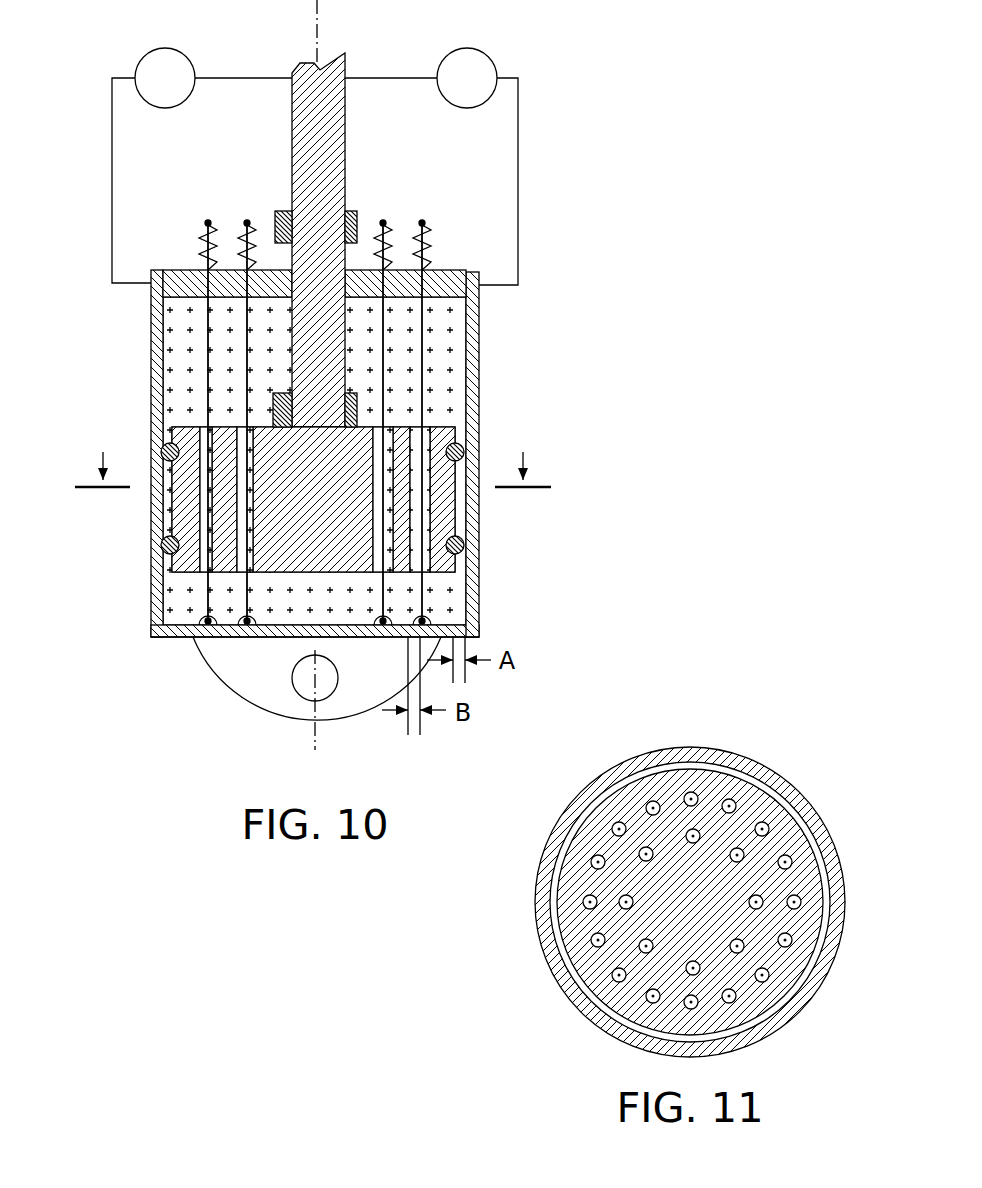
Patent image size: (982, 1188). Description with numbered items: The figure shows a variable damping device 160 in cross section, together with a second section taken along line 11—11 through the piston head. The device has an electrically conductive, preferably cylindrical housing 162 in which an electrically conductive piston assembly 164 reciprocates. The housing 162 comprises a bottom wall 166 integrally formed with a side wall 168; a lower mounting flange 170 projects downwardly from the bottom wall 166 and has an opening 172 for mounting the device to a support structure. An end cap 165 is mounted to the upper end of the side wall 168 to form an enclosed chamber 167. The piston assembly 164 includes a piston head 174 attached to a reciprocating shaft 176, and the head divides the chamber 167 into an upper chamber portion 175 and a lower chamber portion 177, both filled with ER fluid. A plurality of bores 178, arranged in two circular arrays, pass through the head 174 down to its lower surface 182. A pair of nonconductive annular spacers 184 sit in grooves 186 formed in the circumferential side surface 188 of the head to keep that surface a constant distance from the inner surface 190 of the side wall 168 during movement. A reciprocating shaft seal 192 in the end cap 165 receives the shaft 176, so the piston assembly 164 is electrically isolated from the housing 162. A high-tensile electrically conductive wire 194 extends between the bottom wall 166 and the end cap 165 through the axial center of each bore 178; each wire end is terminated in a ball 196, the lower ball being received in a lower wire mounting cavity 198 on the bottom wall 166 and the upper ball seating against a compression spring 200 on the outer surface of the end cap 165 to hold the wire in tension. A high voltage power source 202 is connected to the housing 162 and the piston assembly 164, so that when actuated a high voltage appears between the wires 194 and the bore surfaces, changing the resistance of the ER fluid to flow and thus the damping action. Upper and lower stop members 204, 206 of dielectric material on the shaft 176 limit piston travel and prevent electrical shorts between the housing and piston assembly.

In FIG. 10, the section line 11— 11 is at (313, 455).
In FIG. 10, the variable damping device 160 is at (580, 207).
In FIG. 10, the housing 162 is at (480, 400).
In FIG. 11, the housing 162 is at (556, 816).
In FIG. 10, the piston assembly 164 is at (345, 113).
In FIG. 10, the end cap 165 is at (158, 284).
In FIG. 10, the bottom wall 166 is at (190, 638).
In FIG. 11, the bottom wall 166 is at (614, 775).
In FIG. 10, the enclosed chamber 167 is at (183, 352).
In FIG. 10, the side wall 168 is at (162, 604).
In FIG. 10, the lower mounting flange 170 is at (273, 697).
In FIG. 10, the opening 172 is at (323, 680).
In FIG. 10, the piston head 174 is at (288, 540).
In FIG. 11, the piston head 174 is at (802, 853).
In FIG. 10, the upper chamber portion 175 is at (457, 333).
In FIG. 10, the reciprocating shaft 176 is at (300, 145).
In FIG. 10, the lower chamber portion 177 is at (440, 607).
In FIG. 10, the bores 178 is at (233, 504).
In FIG. 11, the bores 178 is at (692, 792).
In FIG. 10, the lower surface 182 is at (180, 572).
In FIG. 10, the annular spacers 184 is at (163, 449).
In FIG. 11, the annular spacers 184 is at (770, 783).
In FIG. 10, the grooves 186 is at (185, 405).
In FIG. 10, the circumferential side surface 188 is at (455, 503).
In FIG. 11, the circumferential side surface 188 is at (558, 918).
In FIG. 10, the inner surface 190 is at (465, 365).
In FIG. 10, the reciprocating shaft seal 192 is at (280, 213).
In FIG. 10, the electrically conductive wire 194 is at (248, 335).
In FIG. 11, the electrically conductive wire 194 is at (784, 947).
In FIG. 10, the ball 196 is at (247, 222).
In FIG. 10, the lower wire mounting cavity 198 is at (200, 620).
In FIG. 10, the compression spring 200 is at (245, 268).
In FIG. 10, the high voltage power source 202 is at (493, 62).
In FIG. 10, the upper stop member 204 is at (350, 212).
In FIG. 10, the lower stop member 206 is at (358, 418).